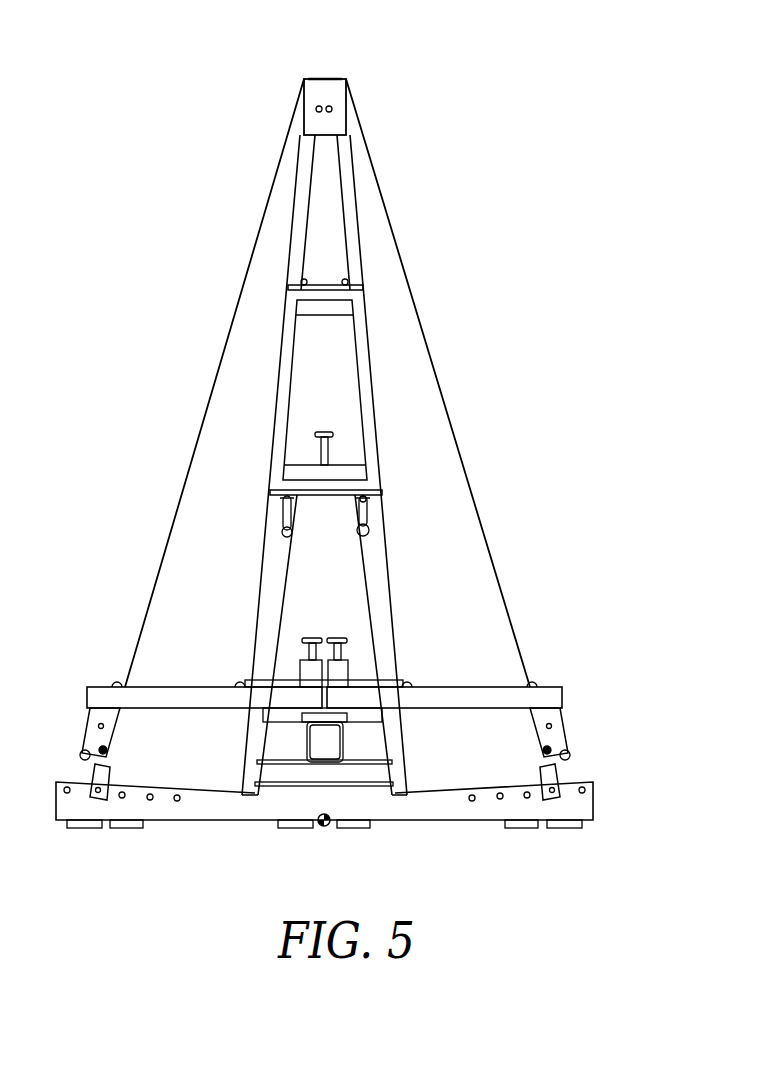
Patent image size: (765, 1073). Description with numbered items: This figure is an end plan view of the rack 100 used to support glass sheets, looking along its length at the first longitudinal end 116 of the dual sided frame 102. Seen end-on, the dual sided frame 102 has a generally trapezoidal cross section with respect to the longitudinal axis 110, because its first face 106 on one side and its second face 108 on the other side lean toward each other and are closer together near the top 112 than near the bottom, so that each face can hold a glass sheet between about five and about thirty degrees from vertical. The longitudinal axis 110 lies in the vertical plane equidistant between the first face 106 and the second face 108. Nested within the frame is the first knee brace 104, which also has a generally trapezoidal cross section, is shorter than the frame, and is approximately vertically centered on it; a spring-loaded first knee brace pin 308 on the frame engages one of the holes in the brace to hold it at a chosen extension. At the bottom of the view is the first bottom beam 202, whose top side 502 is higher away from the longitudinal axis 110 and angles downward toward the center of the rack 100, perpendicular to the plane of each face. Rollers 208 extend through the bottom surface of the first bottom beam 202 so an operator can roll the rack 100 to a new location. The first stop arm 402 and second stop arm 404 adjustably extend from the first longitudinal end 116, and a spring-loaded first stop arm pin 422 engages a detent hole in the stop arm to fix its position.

The rack 100 is at (557, 79).
The dual sided frame 102 is at (338, 79).
The top 112 is at (313, 78).
The first knee brace 104 is at (373, 347).
The first face 106 is at (357, 194).
The second face 108 is at (273, 347).
The longitudinal axis 110 is at (327, 826).
The first longitudinal end 116 is at (395, 635).
The first bottom beam 202 is at (594, 802).
The rollers 208 is at (566, 828).
The spring-loaded first knee brace pin 308 is at (323, 433).
The first stop arm 402 is at (457, 685).
The second stop arm 404 is at (172, 682).
The spring-loaded first stop arm pin 422 is at (334, 636).
The top side 502 is at (135, 783).